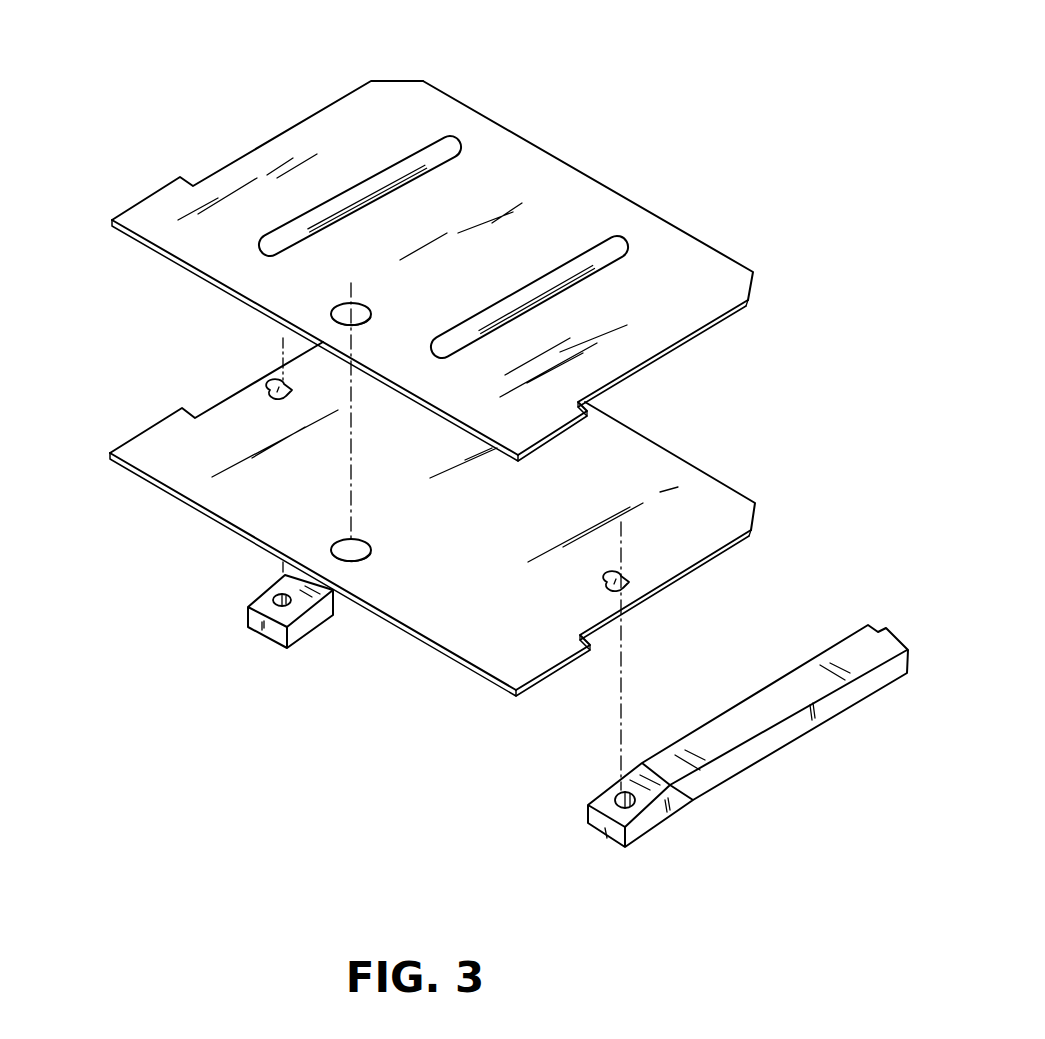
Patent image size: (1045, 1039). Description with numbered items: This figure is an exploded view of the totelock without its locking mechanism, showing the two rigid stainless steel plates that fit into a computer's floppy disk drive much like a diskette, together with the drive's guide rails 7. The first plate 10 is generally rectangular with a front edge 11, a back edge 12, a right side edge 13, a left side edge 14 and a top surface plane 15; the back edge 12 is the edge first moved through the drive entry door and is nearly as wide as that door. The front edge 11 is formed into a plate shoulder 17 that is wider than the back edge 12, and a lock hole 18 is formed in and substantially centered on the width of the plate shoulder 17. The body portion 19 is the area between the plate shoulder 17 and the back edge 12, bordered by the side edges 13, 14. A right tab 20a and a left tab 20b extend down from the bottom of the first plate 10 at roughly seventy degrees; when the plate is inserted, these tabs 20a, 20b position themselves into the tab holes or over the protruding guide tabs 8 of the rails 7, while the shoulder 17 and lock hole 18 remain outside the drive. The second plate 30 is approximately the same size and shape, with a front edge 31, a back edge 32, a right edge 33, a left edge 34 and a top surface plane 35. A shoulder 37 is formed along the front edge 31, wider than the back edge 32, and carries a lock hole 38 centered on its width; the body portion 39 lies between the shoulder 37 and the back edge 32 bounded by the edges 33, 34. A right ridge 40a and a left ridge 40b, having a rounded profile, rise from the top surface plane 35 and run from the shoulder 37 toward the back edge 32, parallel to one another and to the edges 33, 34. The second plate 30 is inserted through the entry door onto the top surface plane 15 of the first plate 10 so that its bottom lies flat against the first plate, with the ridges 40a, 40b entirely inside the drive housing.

The rails 7 is at (277, 637).
The guide tabs 8 is at (268, 600).
The first plate 10 is at (710, 498).
The front edge 11 is at (480, 673).
The back edge 12 is at (655, 440).
The right side edge 13 is at (690, 572).
The left side edge 14 is at (215, 400).
The top surface plane 15 is at (580, 471).
The plate shoulder 17 is at (433, 623).
The lock hole 18 is at (372, 550).
The body portion 19 is at (498, 517).
The right tab 20a is at (625, 590).
The left tab 20b is at (280, 385).
The second plate 30 is at (630, 196).
The front edge 31 is at (160, 262).
The back edge 32 is at (530, 142).
The right edge 33 is at (720, 323).
The left edge 34 is at (276, 137).
The top surface plane 35 is at (508, 261).
The shoulder 37 is at (150, 210).
The lock hole 38 is at (372, 312).
The body portion 39 is at (438, 206).
The right ridge 40a is at (618, 247).
The left ridge 40b is at (440, 130).